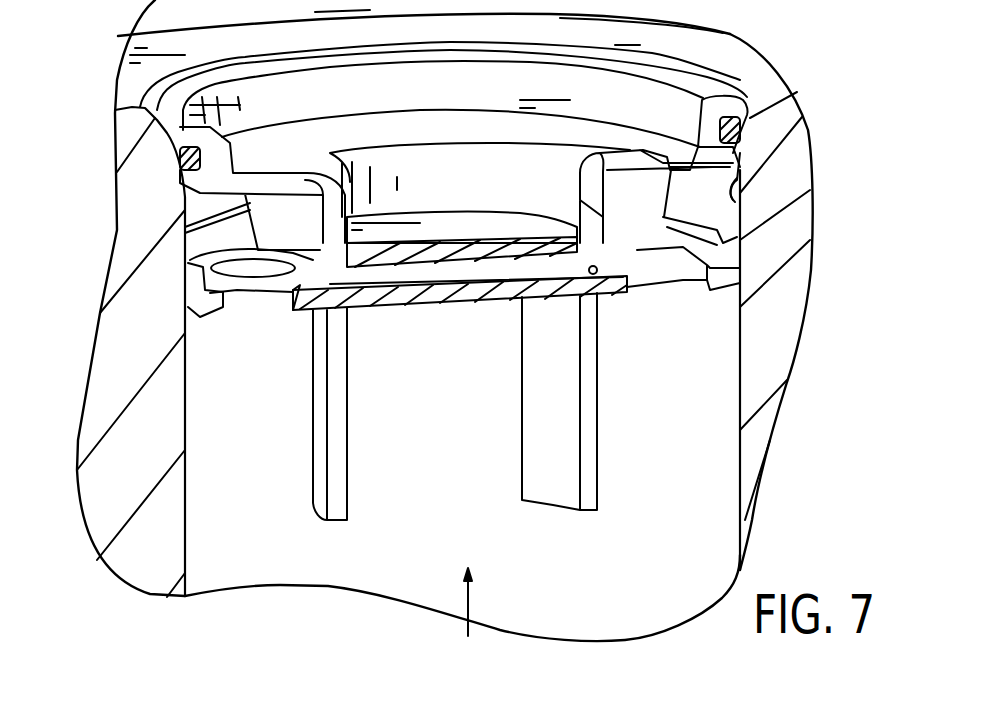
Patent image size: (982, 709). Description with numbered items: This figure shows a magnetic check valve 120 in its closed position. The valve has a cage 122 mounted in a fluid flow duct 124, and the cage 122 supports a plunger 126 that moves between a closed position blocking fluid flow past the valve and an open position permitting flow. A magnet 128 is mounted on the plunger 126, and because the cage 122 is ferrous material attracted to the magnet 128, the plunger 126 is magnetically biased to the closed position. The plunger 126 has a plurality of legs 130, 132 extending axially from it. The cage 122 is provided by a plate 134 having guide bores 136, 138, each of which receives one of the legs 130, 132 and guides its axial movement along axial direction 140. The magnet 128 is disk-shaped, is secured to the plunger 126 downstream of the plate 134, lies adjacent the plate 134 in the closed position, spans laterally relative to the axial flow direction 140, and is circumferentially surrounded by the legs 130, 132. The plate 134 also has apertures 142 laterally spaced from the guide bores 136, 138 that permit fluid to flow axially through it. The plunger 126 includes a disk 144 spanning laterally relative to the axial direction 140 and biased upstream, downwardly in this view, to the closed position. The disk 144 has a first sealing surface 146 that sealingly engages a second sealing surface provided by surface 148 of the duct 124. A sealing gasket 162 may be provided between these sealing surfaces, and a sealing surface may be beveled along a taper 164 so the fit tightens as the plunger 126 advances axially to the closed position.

The magnetic check valve 120 is at (88, 166).
The cage 122 is at (193, 298).
The fluid flow duct 124 is at (187, 563).
The plunger 126 is at (600, 160).
The magnet 128 is at (522, 262).
The leg 130 is at (553, 494).
The leg 132 is at (337, 518).
The plate 134 is at (380, 304).
The guide bore 136 is at (598, 271).
The guide bore 138 is at (293, 295).
The axial direction 140 is at (472, 603).
The apertures 142 is at (252, 300).
The disk 144 is at (293, 177).
The first sealing surface 146 is at (744, 140).
The surface 148 is at (740, 200).
The sealing gasket 162 is at (742, 118).
The taper 164 is at (177, 170).